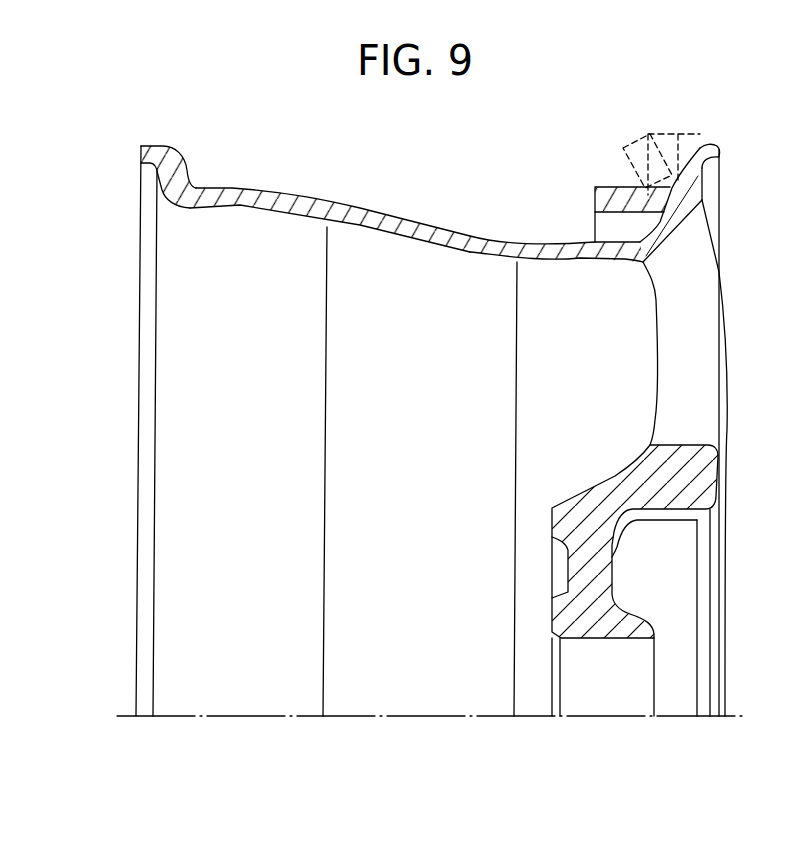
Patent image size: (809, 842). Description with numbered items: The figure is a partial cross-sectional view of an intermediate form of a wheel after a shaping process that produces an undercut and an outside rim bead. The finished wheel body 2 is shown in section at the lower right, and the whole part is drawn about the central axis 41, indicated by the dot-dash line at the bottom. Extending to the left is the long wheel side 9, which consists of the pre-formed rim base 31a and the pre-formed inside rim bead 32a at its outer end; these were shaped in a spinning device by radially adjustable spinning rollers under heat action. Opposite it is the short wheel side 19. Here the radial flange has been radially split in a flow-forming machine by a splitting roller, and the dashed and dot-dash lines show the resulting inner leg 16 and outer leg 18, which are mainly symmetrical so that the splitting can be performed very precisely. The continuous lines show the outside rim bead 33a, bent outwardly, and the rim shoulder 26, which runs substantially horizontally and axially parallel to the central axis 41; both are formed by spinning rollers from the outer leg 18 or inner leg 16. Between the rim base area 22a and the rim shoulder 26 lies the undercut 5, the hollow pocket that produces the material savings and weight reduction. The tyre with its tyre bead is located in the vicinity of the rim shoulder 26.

The wheel body 2 is at (703, 483).
The undercut 5 is at (603, 225).
The long wheel side 9 is at (418, 216).
The inner leg 16 is at (647, 134).
The outer leg 18 is at (687, 134).
The short wheel side 19 is at (717, 146).
The rim base area 22a is at (533, 243).
The rim shoulder 26 is at (603, 190).
The rim base 31a is at (317, 207).
The inside rim bead 32a is at (156, 152).
The outside rim bead 33a is at (720, 151).
The central axis 41 is at (422, 717).